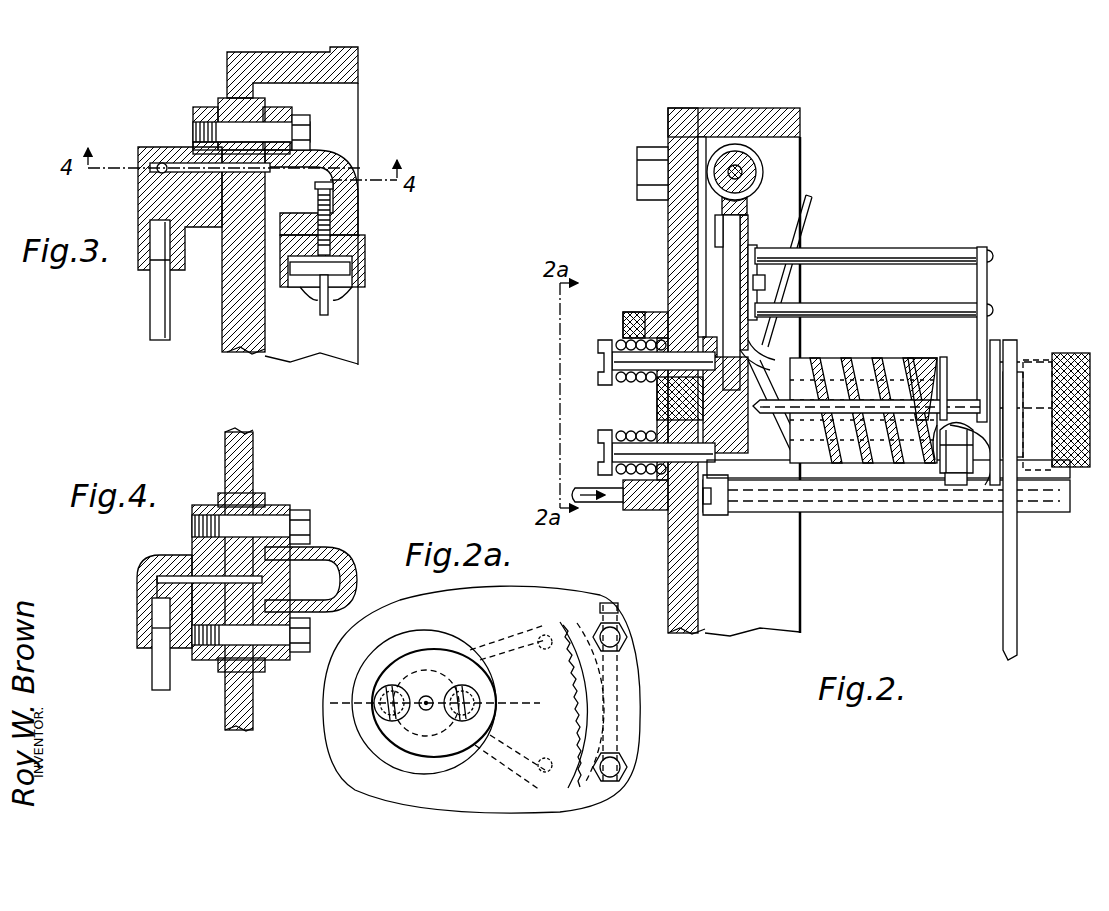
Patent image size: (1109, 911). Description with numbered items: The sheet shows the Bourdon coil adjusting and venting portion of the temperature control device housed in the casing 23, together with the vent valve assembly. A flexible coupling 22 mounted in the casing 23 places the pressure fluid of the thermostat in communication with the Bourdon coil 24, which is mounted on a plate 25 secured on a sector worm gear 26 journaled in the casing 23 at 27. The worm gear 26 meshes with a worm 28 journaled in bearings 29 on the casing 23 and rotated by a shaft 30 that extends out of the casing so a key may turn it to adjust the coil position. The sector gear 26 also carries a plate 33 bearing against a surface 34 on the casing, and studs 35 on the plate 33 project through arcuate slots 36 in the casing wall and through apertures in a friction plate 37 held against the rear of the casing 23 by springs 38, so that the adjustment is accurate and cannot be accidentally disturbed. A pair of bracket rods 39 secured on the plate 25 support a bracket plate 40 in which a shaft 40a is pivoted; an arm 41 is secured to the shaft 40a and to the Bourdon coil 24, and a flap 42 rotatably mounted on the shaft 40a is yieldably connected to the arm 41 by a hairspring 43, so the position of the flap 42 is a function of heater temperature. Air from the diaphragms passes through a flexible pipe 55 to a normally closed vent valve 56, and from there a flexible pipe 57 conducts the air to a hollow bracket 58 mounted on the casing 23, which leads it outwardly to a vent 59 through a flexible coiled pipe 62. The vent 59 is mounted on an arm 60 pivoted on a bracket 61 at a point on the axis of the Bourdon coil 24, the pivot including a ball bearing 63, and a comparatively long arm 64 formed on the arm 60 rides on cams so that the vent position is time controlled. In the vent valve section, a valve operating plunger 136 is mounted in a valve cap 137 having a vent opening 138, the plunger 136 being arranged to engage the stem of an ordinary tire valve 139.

In FIG. 2, the flexible coupling 22 is at (808, 215).
In FIG. 3, the casing 23 is at (300, 60).
In FIG. 4, the casing 23 is at (253, 462).
In FIG. 2A, the casing 23 is at (630, 735).
In FIG. 2, the casing 23 is at (668, 234).
In FIG. 2, the Bourdon coil 24 is at (862, 358).
In FIG. 2A, the plate 25 is at (535, 613).
In FIG. 2, the plate 25 is at (748, 225).
In FIG. 2A, the sector worm gear 26 is at (570, 612).
In FIG. 2, the sector worm gear 26 is at (748, 203).
In FIG. 2A, the journal 27 is at (430, 695).
In FIG. 2, the journal 27 is at (672, 420).
In FIG. 2A, the worm 28 is at (630, 700).
In FIG. 2, the worm 28 is at (740, 150).
In FIG. 2, the bearings 29 is at (735, 165).
In FIG. 2A, the shaft 30 is at (610, 623).
In FIG. 2, the shaft 30 is at (760, 172).
In FIG. 2, the plate 33 is at (712, 345).
In FIG. 2, the surface 34 is at (710, 337).
In FIG. 2A, the studs 35 is at (378, 700).
In FIG. 2, the studs 35 is at (612, 358).
In FIG. 2A, the arcuate slots 36 is at (440, 758).
In FIG. 2, the arcuate slots 36 is at (660, 335).
In FIG. 2A, the friction plate 37 is at (415, 665).
In FIG. 2, the friction plate 37 is at (645, 335).
In FIG. 2A, the springs 38 is at (518, 703).
In FIG. 2, the springs 38 is at (618, 342).
In FIG. 2, the bracket rods 39 is at (885, 260).
In FIG. 2, the bracket plate 40 is at (987, 290).
In FIG. 2, the shaft 40a is at (780, 400).
In FIG. 2, the arm 41 is at (945, 480).
In FIG. 2, the flap 42 is at (975, 370).
In FIG. 2, the hairspring 43 is at (944, 345).
In FIG. 3, the flexible pipe 55 is at (150, 305).
In FIG. 3, the vent valve 56 is at (340, 185).
In FIG. 4, the vent valve 56 is at (330, 612).
In FIG. 3, the flexible pipe 57 is at (160, 178).
In FIG. 4, the flexible pipe 57 is at (160, 670).
In FIG. 2, the flexible pipe 57 is at (600, 502).
In FIG. 2, the hollow bracket 58 is at (850, 513).
In FIG. 2, the vent 59 is at (960, 475).
In FIG. 2, the arm 60 is at (985, 490).
In FIG. 2, the bracket 61 is at (790, 450).
In FIG. 2, the flexible coiled pipe 62 is at (1000, 350).
In FIG. 2, the ball bearing 63 is at (1070, 352).
In FIG. 2, the long arm 64 is at (1017, 597).
In FIG. 3, the valve operating plunger 136 is at (330, 318).
In FIG. 3, the valve cap 137 is at (365, 270).
In FIG. 3, the vent opening 138 is at (355, 300).
In FIG. 3, the tire valve 139 is at (335, 233).